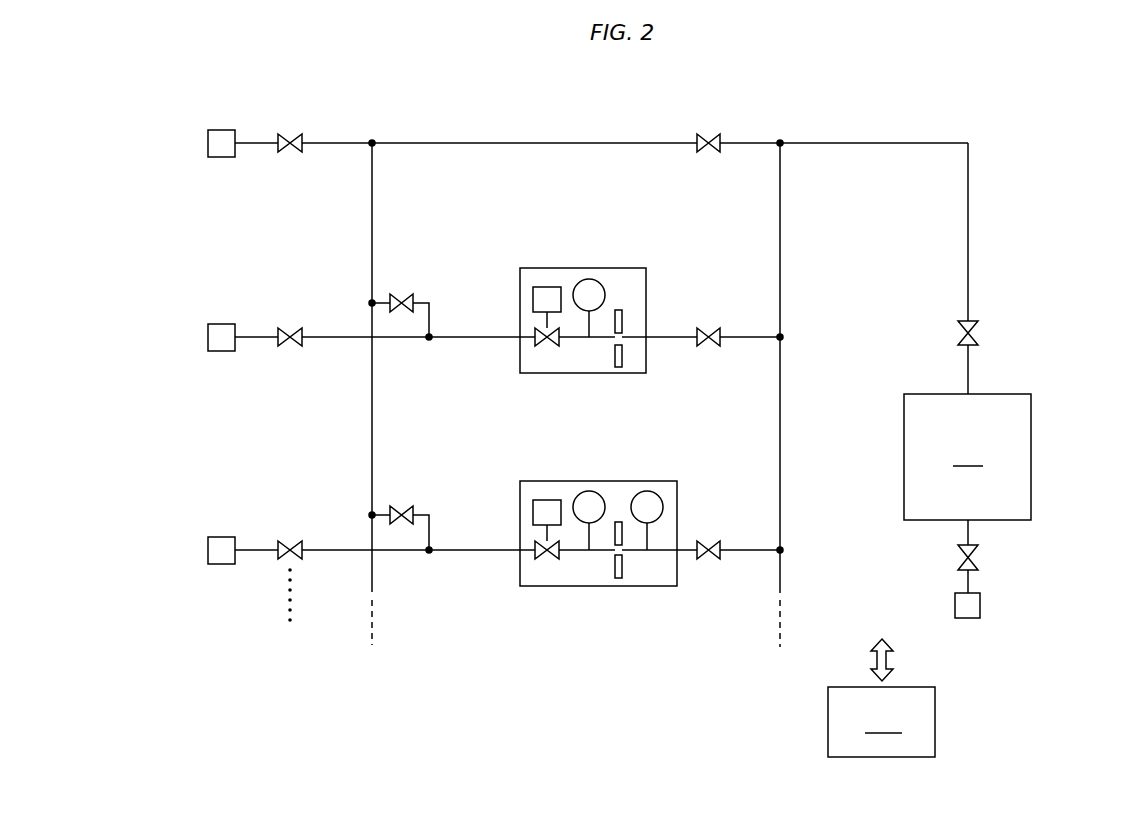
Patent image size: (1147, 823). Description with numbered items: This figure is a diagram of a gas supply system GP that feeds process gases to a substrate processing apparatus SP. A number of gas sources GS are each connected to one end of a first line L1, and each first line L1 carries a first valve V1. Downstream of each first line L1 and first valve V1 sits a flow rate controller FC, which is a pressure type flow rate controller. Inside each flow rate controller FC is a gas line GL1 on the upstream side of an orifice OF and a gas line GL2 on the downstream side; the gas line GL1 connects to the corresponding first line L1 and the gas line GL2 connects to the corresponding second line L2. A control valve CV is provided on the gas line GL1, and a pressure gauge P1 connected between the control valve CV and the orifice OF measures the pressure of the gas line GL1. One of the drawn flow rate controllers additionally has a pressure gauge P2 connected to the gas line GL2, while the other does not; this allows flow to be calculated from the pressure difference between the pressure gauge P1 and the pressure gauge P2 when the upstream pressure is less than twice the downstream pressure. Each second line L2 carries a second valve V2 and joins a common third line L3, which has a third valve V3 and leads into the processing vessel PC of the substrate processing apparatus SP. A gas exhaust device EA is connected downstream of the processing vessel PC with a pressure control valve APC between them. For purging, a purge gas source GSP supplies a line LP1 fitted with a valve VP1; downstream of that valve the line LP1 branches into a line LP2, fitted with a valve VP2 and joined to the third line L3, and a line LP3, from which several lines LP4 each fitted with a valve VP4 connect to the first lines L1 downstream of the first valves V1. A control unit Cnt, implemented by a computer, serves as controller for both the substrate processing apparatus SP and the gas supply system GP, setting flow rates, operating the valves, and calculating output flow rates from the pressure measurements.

The purge gas source GSP is at (207, 144).
The gas sources GS is at (207, 338).
The valve VP1 is at (292, 133).
The valve VP2 is at (712, 133).
The valves VP4 is at (405, 294).
The line LP1 is at (351, 140).
The line LP2 is at (519, 141).
The line LP3 is at (374, 175).
The lines LP4 is at (431, 314).
The gas supply system GP is at (1034, 118).
The first lines L1 is at (344, 335).
The second lines L2 is at (748, 341).
The third line L3 is at (970, 231).
The first valves V1 is at (293, 327).
The second valves V2 is at (712, 327).
The third valve V3 is at (979, 335).
The flow rate controllers FC is at (529, 267).
The control valve CV is at (541, 342).
The pressure gauge P1 is at (587, 278).
The pressure gauge P2 is at (645, 490).
The orifice OF is at (626, 331).
The gas line GL1 is at (578, 340).
The gas line GL2 is at (635, 340).
The substrate processing apparatus SP is at (1050, 420).
The processing vessel PC is at (967, 457).
The pressure control valve APC is at (979, 558).
The gas exhaust device EA is at (981, 605).
The control unit Cnt is at (881, 698).